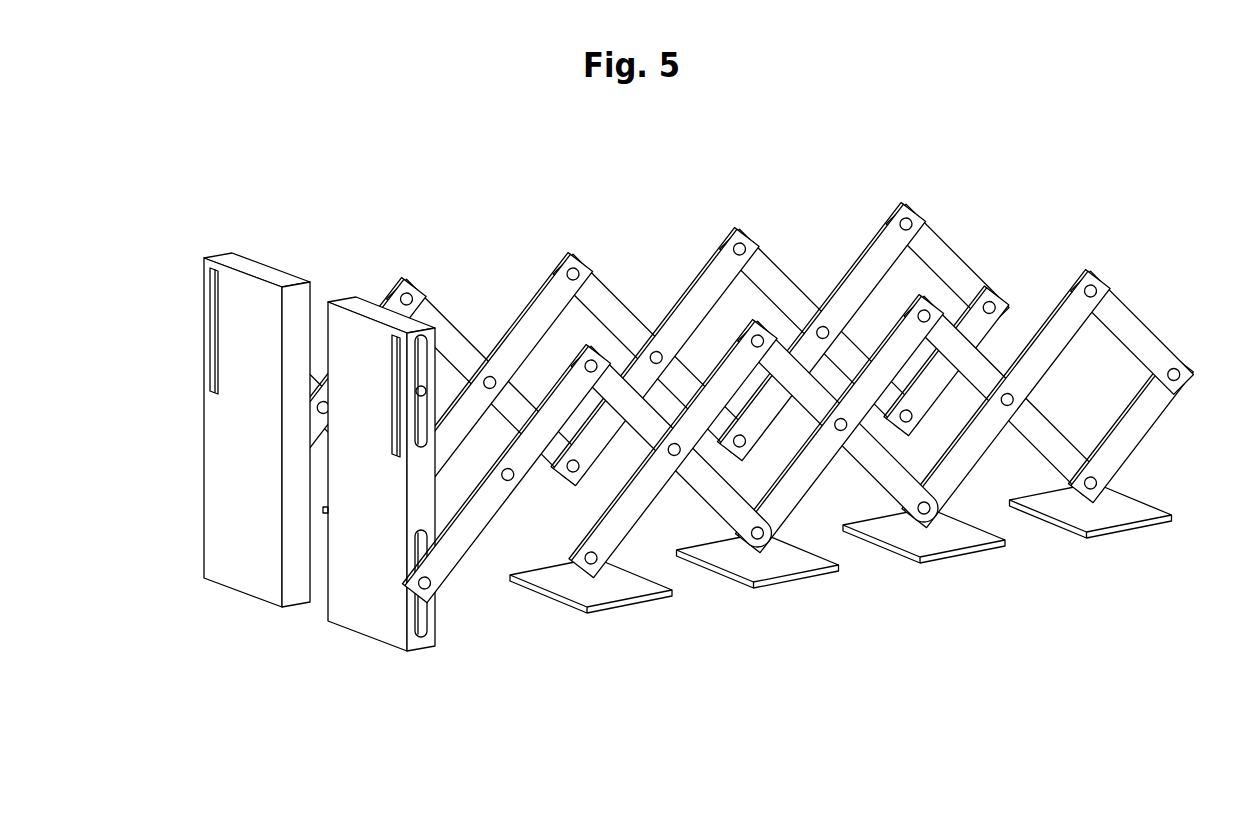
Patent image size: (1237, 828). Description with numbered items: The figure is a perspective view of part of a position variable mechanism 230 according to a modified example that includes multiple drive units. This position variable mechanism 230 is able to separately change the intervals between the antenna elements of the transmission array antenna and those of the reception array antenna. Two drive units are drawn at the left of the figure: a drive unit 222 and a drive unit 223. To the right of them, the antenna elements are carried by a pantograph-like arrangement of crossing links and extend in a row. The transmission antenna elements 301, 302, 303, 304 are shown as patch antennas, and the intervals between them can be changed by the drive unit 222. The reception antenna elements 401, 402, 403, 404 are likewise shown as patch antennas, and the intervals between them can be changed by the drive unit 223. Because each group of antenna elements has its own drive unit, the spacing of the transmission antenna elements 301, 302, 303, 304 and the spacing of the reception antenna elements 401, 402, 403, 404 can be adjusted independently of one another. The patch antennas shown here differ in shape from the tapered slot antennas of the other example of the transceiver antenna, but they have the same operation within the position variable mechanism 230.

The position variable mechanism 230 is at (624, 204).
The drive unit 222 is at (357, 638).
The drive unit 223 is at (233, 597).
The reception antenna element 401 is at (447, 508).
The reception antenna element 402 is at (620, 483).
The reception antenna element 403 is at (788, 462).
The reception antenna element 404 is at (957, 432).
The transmission antenna element 301 is at (613, 607).
The transmission antenna element 302 is at (780, 582).
The transmission antenna element 303 is at (946, 557).
The transmission antenna element 304 is at (1112, 532).